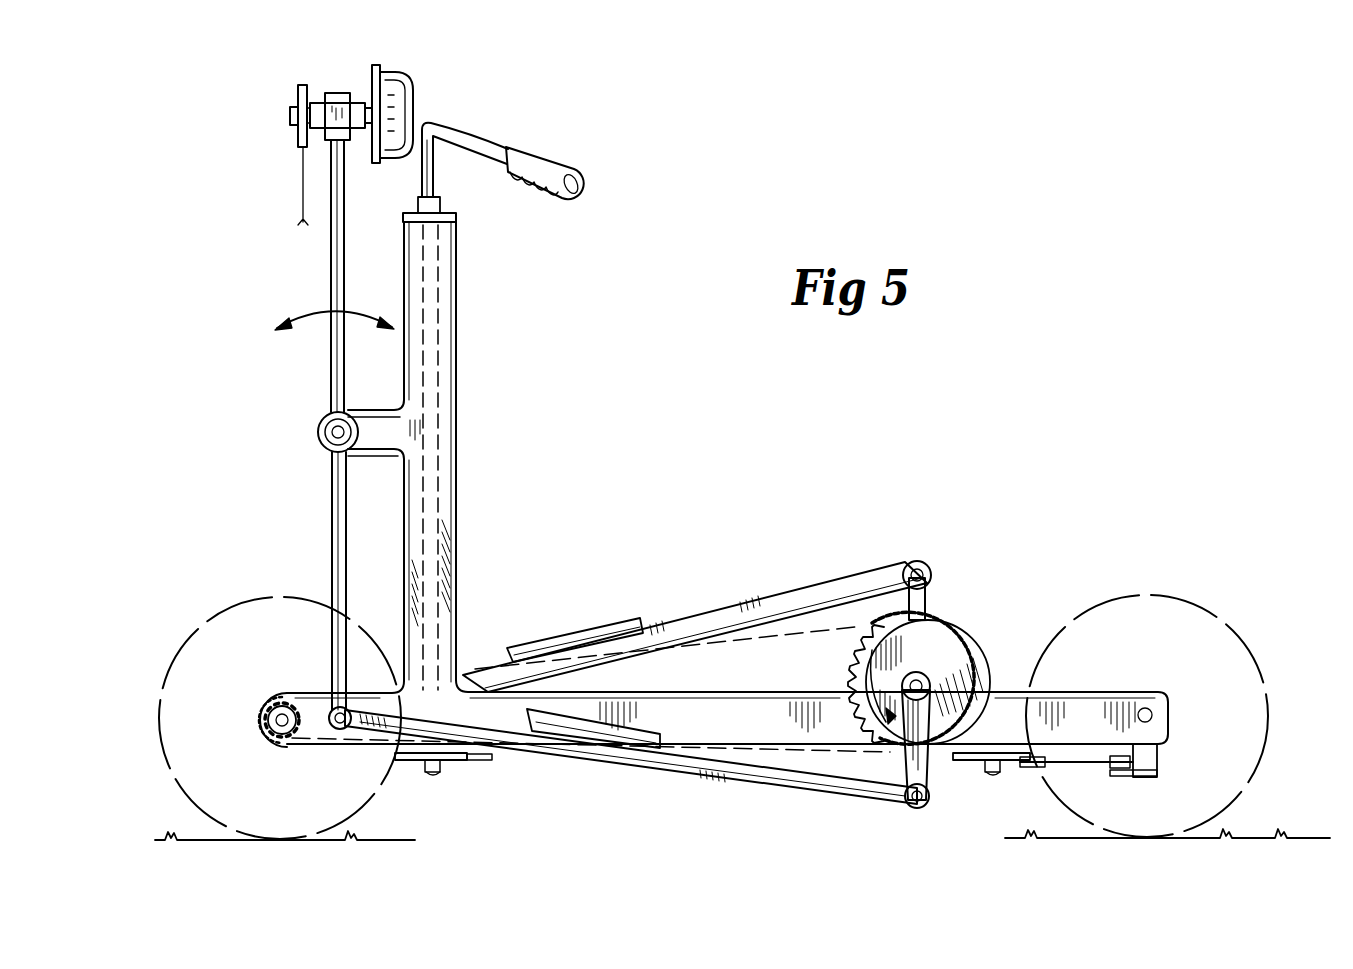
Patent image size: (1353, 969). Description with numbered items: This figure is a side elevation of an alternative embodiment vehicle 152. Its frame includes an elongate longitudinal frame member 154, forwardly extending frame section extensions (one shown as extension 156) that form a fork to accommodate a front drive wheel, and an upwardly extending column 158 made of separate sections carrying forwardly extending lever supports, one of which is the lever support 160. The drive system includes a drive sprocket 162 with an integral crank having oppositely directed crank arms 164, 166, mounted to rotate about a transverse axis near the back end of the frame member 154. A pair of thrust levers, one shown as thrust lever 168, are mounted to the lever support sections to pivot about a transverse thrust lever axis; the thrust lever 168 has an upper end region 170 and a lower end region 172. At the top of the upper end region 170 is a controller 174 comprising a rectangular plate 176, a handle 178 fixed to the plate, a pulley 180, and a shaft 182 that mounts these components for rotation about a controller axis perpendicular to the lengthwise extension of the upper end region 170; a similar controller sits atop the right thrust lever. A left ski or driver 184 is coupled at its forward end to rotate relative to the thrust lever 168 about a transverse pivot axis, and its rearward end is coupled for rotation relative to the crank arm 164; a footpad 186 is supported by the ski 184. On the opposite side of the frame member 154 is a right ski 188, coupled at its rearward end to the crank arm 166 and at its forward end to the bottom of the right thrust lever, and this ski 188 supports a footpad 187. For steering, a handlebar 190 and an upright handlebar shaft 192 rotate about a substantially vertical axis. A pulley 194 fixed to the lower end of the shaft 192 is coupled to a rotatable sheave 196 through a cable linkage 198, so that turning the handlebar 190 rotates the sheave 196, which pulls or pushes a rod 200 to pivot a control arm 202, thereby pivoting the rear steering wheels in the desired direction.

The vehicle 152 is at (555, 441).
The longitudinal frame member 154 is at (722, 705).
The frame section extension 156 is at (275, 748).
The column 158 is at (456, 385).
The lever support 160 is at (322, 425).
The drive sprocket 162 is at (943, 654).
The crank arm 164 is at (920, 768).
The crank arm 166 is at (925, 598).
The thrust lever 168 is at (330, 278).
The upper end region 170 is at (346, 232).
The lower end region 172 is at (334, 537).
The controller 174 is at (418, 72).
The rectangular plate 176 is at (370, 165).
The handle 178 is at (413, 94).
The pulley 180 is at (298, 102).
The shaft 182 is at (292, 116).
The left ski 184 is at (685, 765).
The footpad 186 is at (568, 728).
The footpad 187 is at (523, 648).
The right ski 188 is at (818, 598).
The handlebar 190 is at (564, 168).
The handlebar shaft 192 is at (433, 185).
The pulley 194 is at (410, 765).
The sheave 196 is at (965, 758).
The cable linkage 198 is at (487, 760).
The rod 200 is at (1057, 768).
The control arm 202 is at (1138, 775).